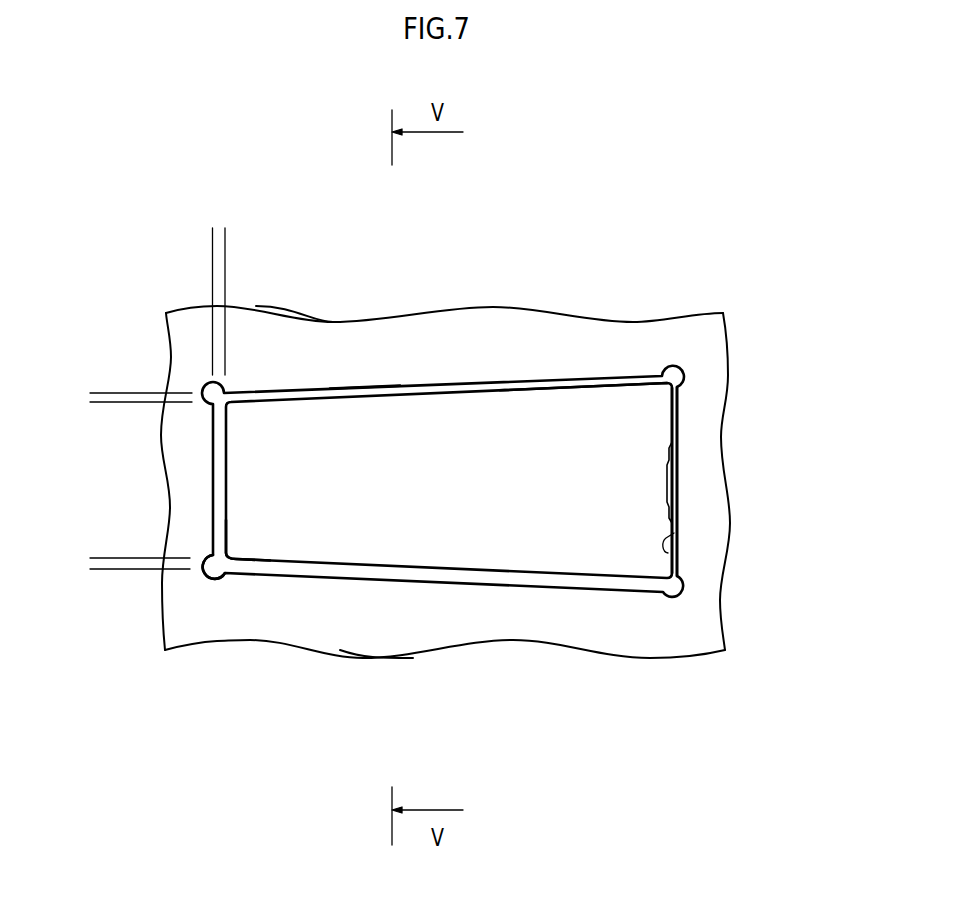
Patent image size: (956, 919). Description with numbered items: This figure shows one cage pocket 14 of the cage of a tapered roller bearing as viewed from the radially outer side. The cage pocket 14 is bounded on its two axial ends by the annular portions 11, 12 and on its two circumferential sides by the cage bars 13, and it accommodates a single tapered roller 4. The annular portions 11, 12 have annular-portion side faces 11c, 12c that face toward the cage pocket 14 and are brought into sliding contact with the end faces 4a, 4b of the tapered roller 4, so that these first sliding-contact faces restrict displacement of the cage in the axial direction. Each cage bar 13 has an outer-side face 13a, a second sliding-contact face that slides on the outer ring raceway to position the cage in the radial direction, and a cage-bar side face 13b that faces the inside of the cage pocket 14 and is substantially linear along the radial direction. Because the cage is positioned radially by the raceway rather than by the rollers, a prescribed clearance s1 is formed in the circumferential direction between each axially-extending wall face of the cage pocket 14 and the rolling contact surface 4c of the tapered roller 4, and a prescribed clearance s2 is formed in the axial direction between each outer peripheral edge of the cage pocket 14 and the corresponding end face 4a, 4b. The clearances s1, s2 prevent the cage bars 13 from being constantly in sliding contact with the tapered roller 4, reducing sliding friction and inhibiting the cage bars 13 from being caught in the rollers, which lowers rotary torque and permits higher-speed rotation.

The tapered roller 4 is at (570, 547).
The end face of the tapered roller 4a is at (240, 550).
The end face of the tapered roller 4b is at (677, 415).
The rolling contact surface 4c is at (570, 386).
The annular portion 11 is at (188, 480).
The annular-portion side face 11c is at (238, 573).
The annular portion 12 is at (702, 478).
The annular-portion side face 12c is at (668, 553).
The cage bar 13 is at (496, 333).
The outer-side face 13a is at (288, 340).
The cage-bar side face 13b is at (350, 390).
The cage pocket 14 is at (342, 566).
The clearance s1 is at (93, 358).
The clearance s2 is at (273, 233).